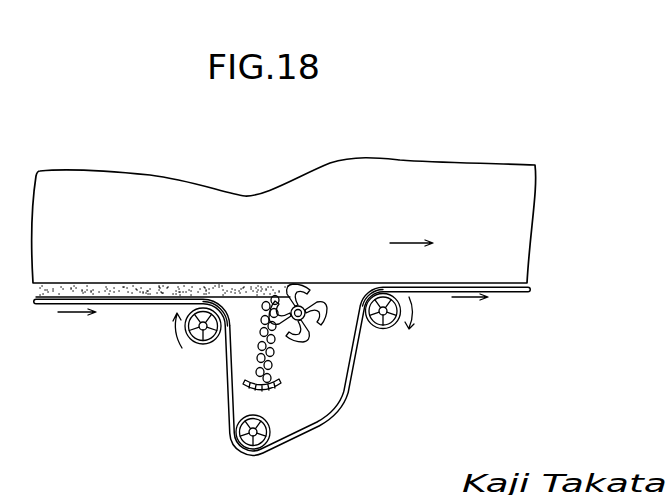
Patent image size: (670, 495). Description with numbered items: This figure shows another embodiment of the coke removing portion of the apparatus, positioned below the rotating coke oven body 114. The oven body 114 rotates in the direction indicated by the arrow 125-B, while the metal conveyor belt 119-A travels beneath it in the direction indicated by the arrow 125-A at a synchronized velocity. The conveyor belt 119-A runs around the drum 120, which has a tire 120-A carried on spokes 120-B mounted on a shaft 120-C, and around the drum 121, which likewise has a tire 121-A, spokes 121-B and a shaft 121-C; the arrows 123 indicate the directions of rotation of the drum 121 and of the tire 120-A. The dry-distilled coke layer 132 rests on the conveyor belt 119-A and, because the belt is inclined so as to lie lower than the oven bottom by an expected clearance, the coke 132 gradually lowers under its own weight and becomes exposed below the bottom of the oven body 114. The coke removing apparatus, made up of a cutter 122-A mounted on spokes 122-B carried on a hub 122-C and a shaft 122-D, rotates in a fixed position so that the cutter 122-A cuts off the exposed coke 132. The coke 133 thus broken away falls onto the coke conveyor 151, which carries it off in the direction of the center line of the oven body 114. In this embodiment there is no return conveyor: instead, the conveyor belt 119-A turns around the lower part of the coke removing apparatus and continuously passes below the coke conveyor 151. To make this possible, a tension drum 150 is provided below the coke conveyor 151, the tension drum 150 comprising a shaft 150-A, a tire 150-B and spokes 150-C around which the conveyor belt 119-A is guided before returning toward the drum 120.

The oven body 114 is at (281, 232).
The coke 132 is at (160, 283).
The conveyor belt 119-A is at (323, 408).
The arrow indicating direction of travel of the conveyor 125-A is at (70, 313).
The arrow indicating direction of rotation of the oven body 125-B is at (404, 244).
The drum 121 is at (141, 401).
The arrow indicating direction of rotation of the drum 123 is at (178, 335).
The tire 121-A is at (188, 342).
The spokes 121-B is at (207, 346).
The shaft 121-C is at (219, 350).
The tension drum 150 is at (206, 437).
The shaft 150-A is at (260, 446).
The tire 150-B is at (242, 449).
The spokes 150-C is at (238, 441).
The drum 120 is at (428, 372).
The tire 120-A is at (375, 329).
The spokes 120-B is at (387, 326).
The shaft 120-C is at (373, 285).
The cutter 122-A is at (296, 340).
The spokes 122-B is at (308, 337).
The hub 122-C is at (304, 293).
The shaft 122-D is at (302, 320).
The coke 133 is at (278, 354).
The coke conveyor 151 is at (249, 386).